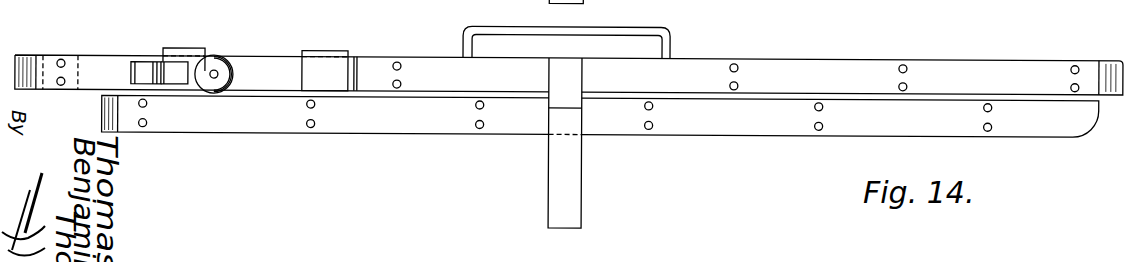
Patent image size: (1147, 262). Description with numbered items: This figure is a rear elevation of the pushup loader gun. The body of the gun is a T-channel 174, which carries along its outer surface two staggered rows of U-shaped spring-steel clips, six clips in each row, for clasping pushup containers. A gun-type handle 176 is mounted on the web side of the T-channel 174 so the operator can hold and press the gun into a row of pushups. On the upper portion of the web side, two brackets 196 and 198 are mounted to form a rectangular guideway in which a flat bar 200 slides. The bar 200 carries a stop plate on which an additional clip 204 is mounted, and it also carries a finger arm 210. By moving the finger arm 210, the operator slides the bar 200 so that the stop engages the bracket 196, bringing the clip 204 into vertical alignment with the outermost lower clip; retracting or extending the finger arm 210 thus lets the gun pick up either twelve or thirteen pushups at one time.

The T-channel 174 is at (802, 128).
The gun-type handle 176 is at (549, 173).
The bracket 196 is at (190, 50).
The bracket 198 is at (333, 50).
The flat bar 200 is at (110, 60).
The clip 204 is at (28, 53).
The finger arm 210 is at (217, 90).